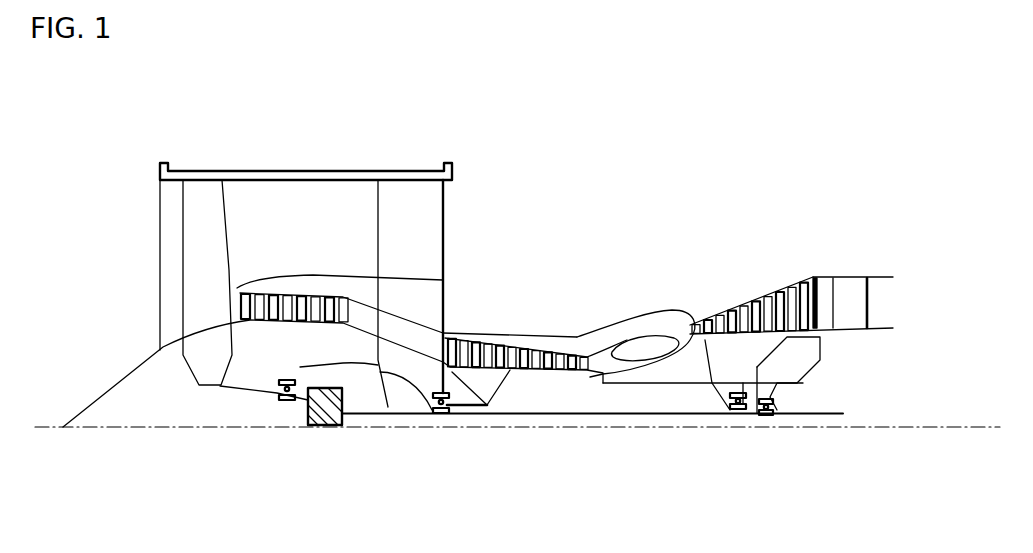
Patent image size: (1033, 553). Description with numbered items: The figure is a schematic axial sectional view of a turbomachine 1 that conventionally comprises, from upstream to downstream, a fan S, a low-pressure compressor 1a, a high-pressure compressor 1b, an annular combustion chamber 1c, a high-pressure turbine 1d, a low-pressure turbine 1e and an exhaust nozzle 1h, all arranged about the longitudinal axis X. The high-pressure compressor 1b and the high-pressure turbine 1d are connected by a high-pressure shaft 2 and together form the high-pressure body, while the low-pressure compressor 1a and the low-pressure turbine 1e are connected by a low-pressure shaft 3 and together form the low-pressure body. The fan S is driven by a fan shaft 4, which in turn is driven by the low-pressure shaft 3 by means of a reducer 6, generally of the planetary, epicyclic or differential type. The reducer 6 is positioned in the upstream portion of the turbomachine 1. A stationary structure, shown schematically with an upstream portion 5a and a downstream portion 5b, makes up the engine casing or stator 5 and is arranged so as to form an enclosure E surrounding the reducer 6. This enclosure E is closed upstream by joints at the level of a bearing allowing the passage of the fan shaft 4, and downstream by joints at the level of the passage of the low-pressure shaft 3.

The turbomachine 1 is at (560, 212).
The low-pressure compressor 1a is at (263, 293).
The high-pressure compressor 1b is at (477, 342).
The annular combustion chamber 1c is at (657, 338).
The high-pressure turbine 1d is at (697, 322).
The low-pressure turbine 1e is at (820, 288).
The exhaust nozzle 1h is at (880, 305).
The high-pressure shaft 2 is at (625, 383).
The low-pressure shaft 3 is at (543, 413).
The fan shaft 4 is at (272, 400).
The engine casing or stator 5 is at (356, 350).
The upstream portion 5a is at (300, 367).
The downstream portion 5b is at (397, 390).
The reducer 6 is at (325, 427).
The enclosure E is at (353, 390).
The fan S is at (193, 242).
The rotation axis X is at (42, 428).